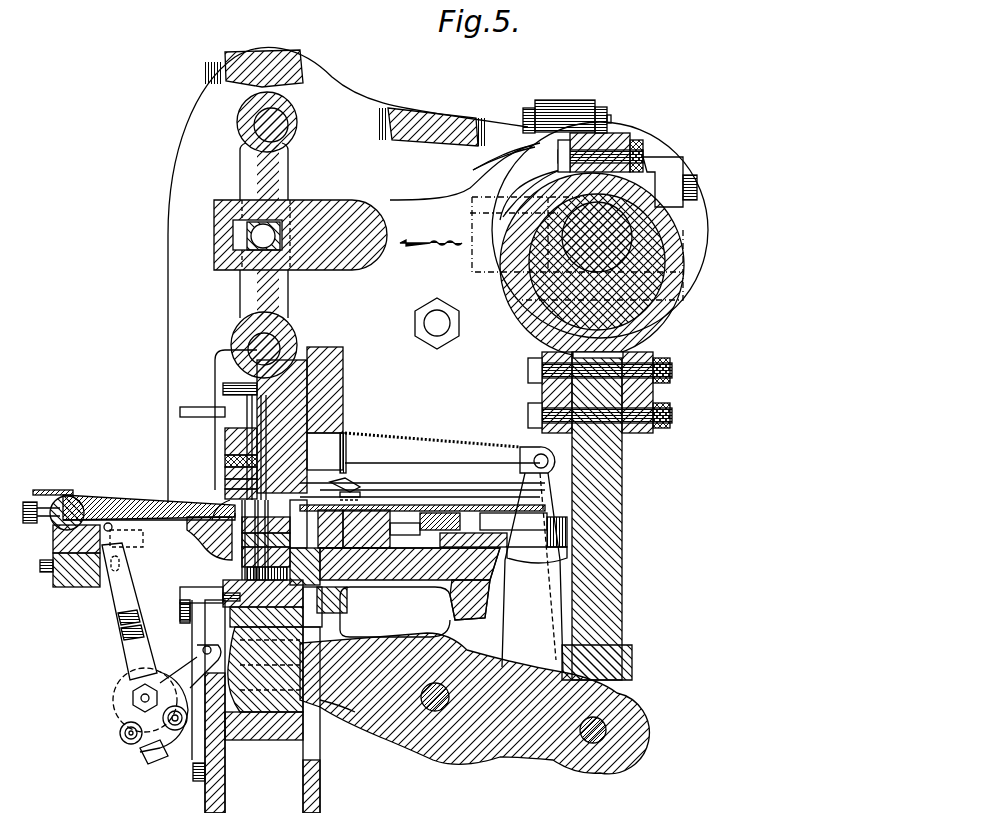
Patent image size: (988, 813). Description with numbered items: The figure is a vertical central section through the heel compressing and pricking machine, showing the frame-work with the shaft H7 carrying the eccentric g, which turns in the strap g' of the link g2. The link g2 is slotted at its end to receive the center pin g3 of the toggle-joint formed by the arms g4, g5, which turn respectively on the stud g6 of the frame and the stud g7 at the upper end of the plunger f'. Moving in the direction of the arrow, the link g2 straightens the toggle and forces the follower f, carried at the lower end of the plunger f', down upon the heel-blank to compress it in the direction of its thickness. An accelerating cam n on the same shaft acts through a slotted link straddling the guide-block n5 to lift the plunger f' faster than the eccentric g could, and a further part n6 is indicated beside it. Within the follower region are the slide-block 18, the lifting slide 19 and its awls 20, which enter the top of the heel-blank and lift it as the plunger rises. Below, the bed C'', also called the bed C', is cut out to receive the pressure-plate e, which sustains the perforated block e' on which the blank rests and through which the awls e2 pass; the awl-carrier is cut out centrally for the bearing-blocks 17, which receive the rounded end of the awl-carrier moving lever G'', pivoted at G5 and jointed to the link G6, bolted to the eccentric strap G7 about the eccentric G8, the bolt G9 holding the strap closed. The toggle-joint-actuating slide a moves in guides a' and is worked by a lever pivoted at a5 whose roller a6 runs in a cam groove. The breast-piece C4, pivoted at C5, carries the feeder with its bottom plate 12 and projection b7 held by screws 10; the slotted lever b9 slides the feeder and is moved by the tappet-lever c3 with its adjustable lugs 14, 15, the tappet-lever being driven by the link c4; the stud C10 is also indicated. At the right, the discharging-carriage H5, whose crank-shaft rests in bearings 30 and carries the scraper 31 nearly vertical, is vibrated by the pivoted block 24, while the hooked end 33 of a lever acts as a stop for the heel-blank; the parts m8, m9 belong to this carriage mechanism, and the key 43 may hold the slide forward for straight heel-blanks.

The eccentric g is at (531, 188).
The strap g' is at (491, 159).
The link g2 is at (393, 210).
The center pin g3 is at (250, 238).
The toggle-joint arm g4 is at (262, 172).
The toggle-joint arm g5 is at (258, 305).
The stud g6 is at (256, 127).
The stud g7 is at (246, 347).
The bolt G9 is at (620, 158).
The shaft H7 is at (680, 218).
The eccentric G8 is at (660, 297).
The eccentric strap G7 is at (600, 238).
The link G6 is at (627, 612).
The pivot G5 is at (430, 707).
The awl-carrier moving lever G'' is at (474, 696).
The follower f is at (222, 500).
The plunger f' is at (314, 420).
The guide-block n5 is at (226, 389).
The nut n6 is at (225, 426).
The cam n is at (224, 445).
The slide-block 18 is at (225, 452).
The lifting slide 19 is at (226, 459).
The awls 20 is at (226, 473).
The hooked end 33 is at (350, 468).
The pivoted block 24 is at (343, 488).
The bearings 30 is at (360, 486).
The scraper 31 is at (366, 490).
The discharging-carriage H5 is at (387, 502).
The link m8 is at (527, 463).
The connecting rod m9 is at (532, 572).
The key 43 is at (455, 536).
The pressure-plate e is at (305, 559).
The block e' is at (300, 524).
The awls e2 is at (321, 528).
The bed C'' is at (410, 592).
The bearing-blocks 17 is at (328, 720).
The toggle-joint-actuating slide a is at (250, 700).
The guides a' is at (337, 747).
The breast-piece C4 is at (238, 540).
The pivot C5 is at (88, 498).
The projection b7 is at (57, 493).
The screws 10 is at (77, 498).
The pivot a5 is at (50, 523).
The roller or stud a6 is at (53, 555).
The pin C10 is at (114, 528).
The bottom plate 12 is at (126, 544).
The slotted lever b9 is at (129, 611).
The bed C' is at (140, 710).
The tappet-lever c3 is at (170, 704).
The lug 14 is at (120, 734).
The lug 15 is at (152, 746).
The link c4 is at (210, 646).